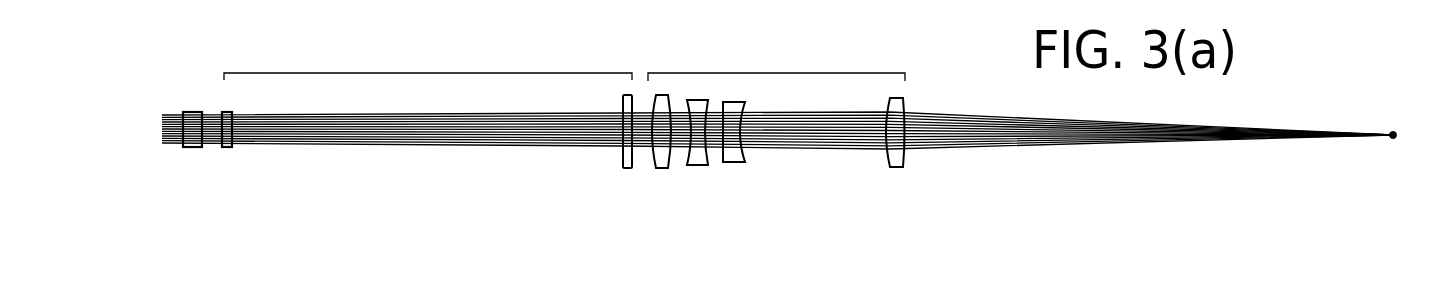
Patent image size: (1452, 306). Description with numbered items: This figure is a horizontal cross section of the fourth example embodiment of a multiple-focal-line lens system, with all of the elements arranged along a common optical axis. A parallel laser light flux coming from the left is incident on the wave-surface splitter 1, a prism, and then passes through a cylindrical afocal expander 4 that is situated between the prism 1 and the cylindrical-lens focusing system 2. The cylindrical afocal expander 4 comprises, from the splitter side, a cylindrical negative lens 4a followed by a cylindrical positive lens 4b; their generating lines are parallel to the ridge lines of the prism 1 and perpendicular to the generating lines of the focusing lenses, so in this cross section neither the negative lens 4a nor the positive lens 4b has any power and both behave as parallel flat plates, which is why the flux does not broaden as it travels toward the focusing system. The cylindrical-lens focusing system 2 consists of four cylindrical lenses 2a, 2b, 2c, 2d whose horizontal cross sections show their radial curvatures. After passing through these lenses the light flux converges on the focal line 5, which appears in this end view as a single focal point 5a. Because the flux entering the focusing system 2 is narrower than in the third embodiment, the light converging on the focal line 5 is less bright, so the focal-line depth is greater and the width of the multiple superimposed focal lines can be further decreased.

The wave-surface splitter 1 is at (195, 112).
The cylindrical afocal expander 4 is at (428, 60).
The cylindrical negative lens 4a is at (227, 148).
The cylindrical positive lens 4b is at (628, 170).
The cylindrical-lens focusing system 2 is at (776, 60).
The cylindrical lens 2a is at (661, 170).
The cylindrical lens 2b is at (700, 168).
The cylindrical lens 2c is at (737, 163).
The cylindrical lens 2d is at (897, 169).
The focal line 5 is at (1393, 135).
The focal point 5a is at (1402, 103).